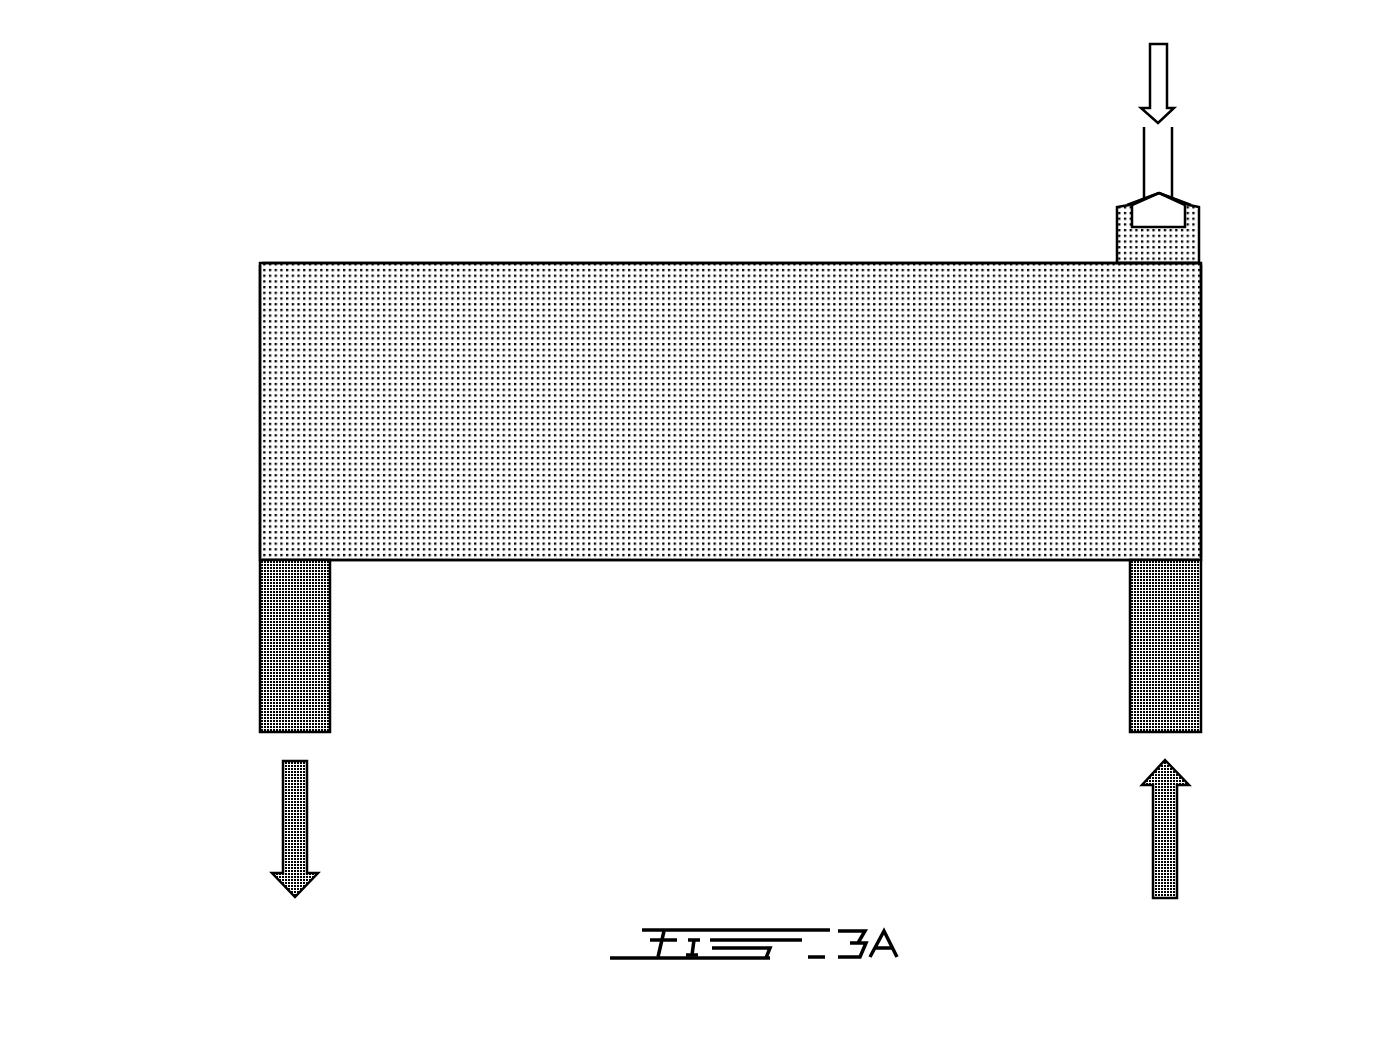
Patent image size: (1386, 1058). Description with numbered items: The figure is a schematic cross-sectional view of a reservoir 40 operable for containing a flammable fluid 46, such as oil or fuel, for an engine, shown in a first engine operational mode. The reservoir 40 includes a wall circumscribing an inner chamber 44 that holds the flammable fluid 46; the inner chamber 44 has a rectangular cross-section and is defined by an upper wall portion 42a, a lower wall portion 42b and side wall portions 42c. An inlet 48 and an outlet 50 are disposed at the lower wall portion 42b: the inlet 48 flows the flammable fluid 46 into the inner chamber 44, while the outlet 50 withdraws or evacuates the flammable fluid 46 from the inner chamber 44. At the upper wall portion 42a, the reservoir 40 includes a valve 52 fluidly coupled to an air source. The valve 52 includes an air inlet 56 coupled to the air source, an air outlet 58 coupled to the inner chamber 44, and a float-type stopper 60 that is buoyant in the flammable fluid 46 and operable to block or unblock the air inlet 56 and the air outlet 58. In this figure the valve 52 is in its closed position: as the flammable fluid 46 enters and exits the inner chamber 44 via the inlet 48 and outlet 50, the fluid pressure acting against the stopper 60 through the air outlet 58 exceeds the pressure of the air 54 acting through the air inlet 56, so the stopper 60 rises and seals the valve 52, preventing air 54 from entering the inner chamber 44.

The reservoir 40 is at (243, 168).
The upper wall portion 42a is at (611, 262).
The lower wall portion 42b is at (582, 561).
The side wall portions 42c is at (262, 392).
The inner chamber 44 is at (1106, 373).
The flammable fluid 46 is at (293, 829).
The inlet 48 is at (1155, 637).
The outlet 50 is at (282, 642).
The valve 52 is at (1176, 153).
The air 54 is at (1207, 83).
The air inlet 56 is at (1157, 145).
The air outlet 58 is at (1152, 243).
The stopper 60 is at (1147, 212).